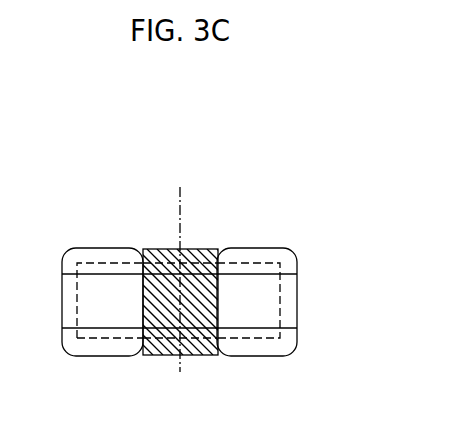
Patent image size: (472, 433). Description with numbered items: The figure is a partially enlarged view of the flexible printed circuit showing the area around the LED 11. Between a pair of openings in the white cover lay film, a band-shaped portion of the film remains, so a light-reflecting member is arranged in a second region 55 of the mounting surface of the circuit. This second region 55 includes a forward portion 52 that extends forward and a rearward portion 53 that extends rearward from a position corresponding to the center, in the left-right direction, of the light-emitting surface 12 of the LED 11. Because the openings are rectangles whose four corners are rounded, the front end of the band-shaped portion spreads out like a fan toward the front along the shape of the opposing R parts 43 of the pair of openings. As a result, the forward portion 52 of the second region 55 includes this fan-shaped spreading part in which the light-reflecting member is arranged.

The LED 11 is at (253, 338).
The light-emitting surface 12 is at (102, 262).
The R parts 43 is at (142, 256).
The forward portion 52 is at (190, 263).
The rearward portion 53 is at (200, 263).
The second region 55 is at (180, 223).